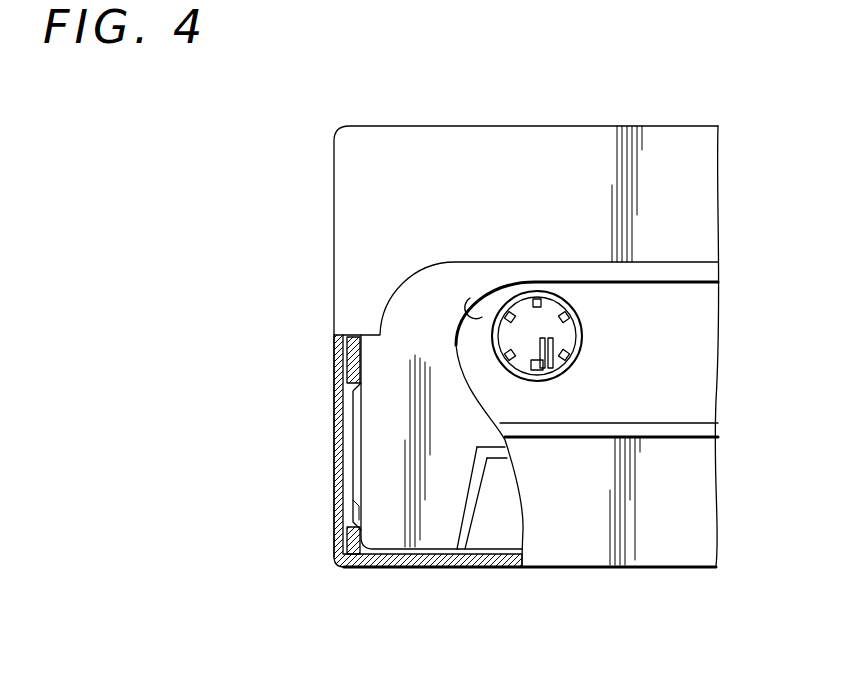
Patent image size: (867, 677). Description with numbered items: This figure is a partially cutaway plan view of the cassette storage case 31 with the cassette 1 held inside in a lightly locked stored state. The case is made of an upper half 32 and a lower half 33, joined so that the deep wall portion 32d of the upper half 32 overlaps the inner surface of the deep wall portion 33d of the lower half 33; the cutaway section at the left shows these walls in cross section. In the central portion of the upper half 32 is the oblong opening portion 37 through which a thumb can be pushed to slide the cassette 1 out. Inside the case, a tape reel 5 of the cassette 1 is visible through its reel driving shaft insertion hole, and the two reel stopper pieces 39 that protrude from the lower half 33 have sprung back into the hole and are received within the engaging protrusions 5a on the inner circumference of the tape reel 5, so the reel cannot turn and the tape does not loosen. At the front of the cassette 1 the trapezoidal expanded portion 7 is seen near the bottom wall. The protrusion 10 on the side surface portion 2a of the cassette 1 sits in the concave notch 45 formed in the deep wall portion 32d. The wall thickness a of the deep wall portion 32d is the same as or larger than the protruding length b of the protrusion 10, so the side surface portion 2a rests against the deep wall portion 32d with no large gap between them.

The cassette storage case 31 is at (318, 178).
The upper half 32 is at (361, 240).
The deep wall portion 32d is at (340, 340).
The lower half 33 is at (337, 527).
The deep wall portion 33d is at (340, 473).
The concave notch 45 is at (340, 397).
The protrusion 10 is at (362, 430).
The side surface portion 2a is at (362, 500).
The cassette 1 is at (385, 530).
The trapezoidal expanded portion 7 is at (503, 523).
The tape reel 5 is at (527, 294).
The engaging protrusion 5a is at (577, 329).
The opening portion 37 is at (479, 292).
The reel stopper piece 39 is at (543, 338).
The thickness a is at (390, 357).
The protruding length b is at (395, 448).